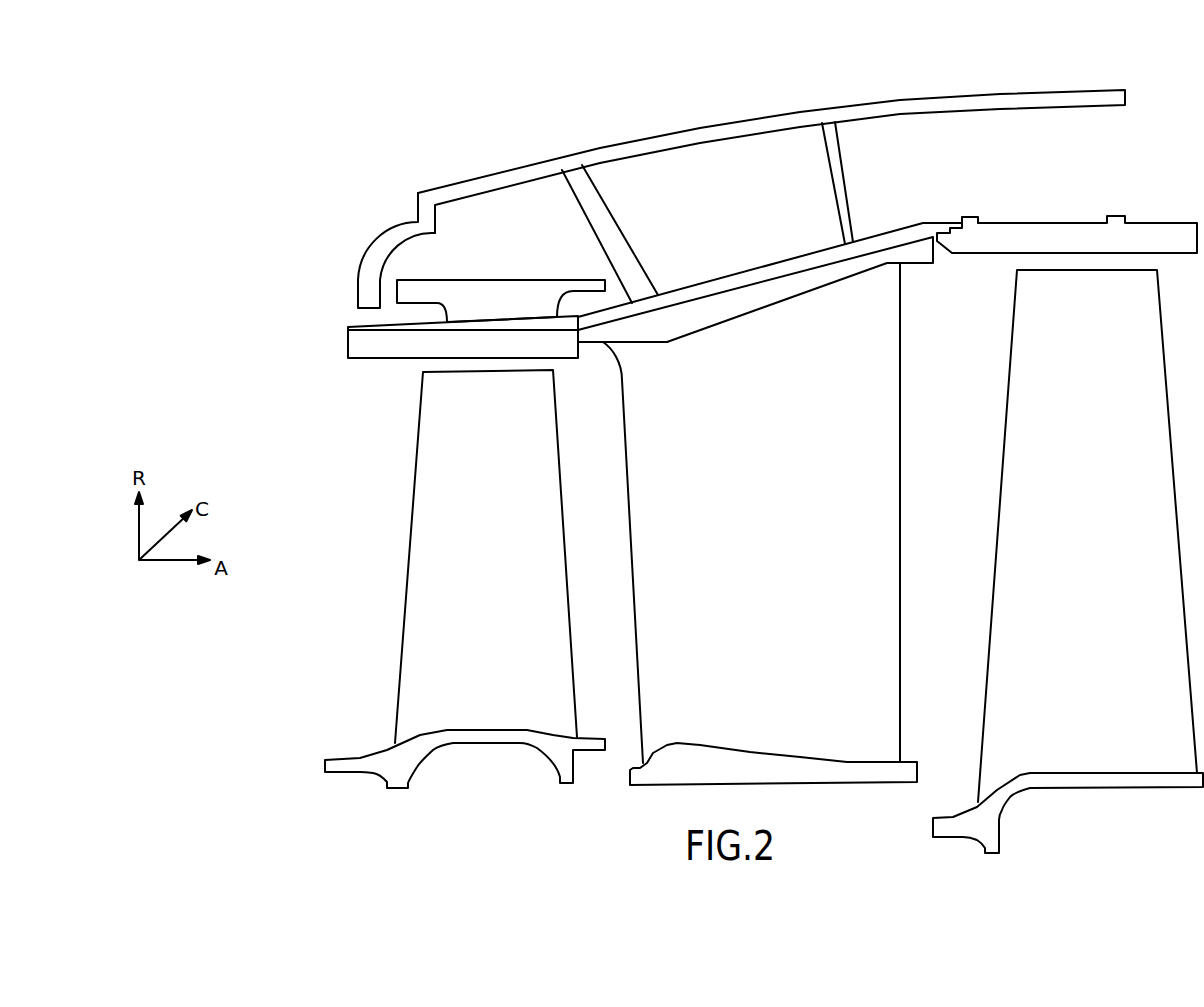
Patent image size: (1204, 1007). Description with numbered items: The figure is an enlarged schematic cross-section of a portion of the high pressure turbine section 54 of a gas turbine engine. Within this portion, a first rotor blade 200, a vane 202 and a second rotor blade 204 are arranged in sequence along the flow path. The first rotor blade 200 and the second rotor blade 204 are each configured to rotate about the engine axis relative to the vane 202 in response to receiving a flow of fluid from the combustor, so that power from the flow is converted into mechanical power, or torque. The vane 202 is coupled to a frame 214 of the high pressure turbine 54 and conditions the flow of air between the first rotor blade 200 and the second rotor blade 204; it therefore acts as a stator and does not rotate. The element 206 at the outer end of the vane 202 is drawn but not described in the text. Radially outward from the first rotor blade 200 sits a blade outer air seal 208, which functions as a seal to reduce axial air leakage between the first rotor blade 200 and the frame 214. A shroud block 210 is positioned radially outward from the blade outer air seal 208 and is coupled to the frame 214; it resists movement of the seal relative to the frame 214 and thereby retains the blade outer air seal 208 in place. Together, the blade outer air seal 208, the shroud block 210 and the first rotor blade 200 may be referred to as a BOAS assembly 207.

The high pressure turbine section 54 is at (333, 140).
The first rotor blade 200 is at (440, 385).
The vane 202 is at (837, 297).
The second rotor blade 204 is at (1132, 307).
The vane outer platform 206 is at (762, 283).
The BOAS assembly 207 is at (415, 262).
The blade outer air seal 208 is at (377, 343).
The shroud block 210 is at (398, 323).
The frame 214 is at (980, 102).